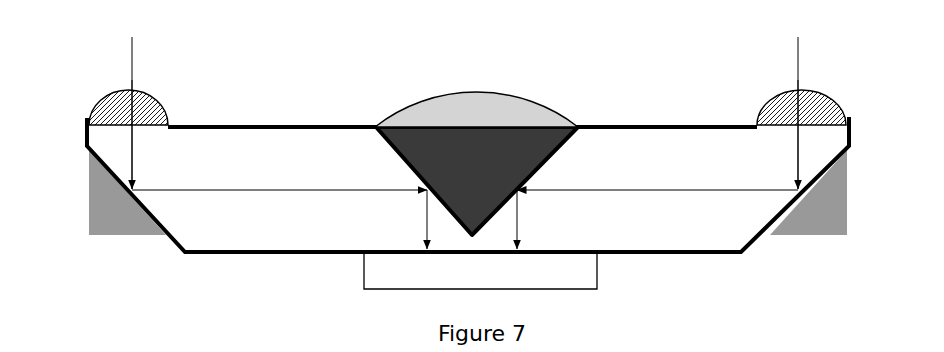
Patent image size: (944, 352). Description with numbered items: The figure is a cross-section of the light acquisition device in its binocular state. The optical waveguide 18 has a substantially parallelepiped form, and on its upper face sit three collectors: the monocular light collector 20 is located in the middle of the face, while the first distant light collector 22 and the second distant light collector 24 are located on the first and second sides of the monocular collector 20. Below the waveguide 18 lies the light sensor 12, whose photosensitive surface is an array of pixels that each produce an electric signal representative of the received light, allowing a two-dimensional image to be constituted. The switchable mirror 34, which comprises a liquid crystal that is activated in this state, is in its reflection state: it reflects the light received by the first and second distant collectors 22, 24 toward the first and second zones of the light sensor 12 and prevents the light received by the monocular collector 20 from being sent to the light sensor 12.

The light sensor 12 is at (480, 271).
The optical waveguide 18 is at (272, 218).
The monocular light collector 20 is at (438, 77).
The first distant light collector 22 is at (122, 63).
The second distant light collector 24 is at (786, 76).
The switchable mirror 34 is at (550, 166).